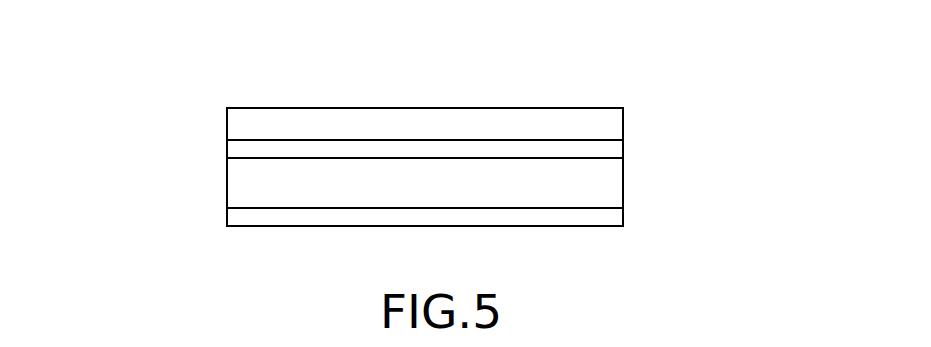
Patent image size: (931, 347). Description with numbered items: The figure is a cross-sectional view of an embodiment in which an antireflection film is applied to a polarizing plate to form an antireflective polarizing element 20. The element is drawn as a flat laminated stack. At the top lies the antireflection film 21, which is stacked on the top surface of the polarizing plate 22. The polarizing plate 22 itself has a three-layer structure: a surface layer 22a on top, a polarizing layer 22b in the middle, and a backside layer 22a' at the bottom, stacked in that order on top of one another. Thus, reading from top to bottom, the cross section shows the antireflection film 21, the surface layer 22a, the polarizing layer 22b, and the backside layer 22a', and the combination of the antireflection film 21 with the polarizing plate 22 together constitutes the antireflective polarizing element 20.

The antireflective polarizing element 20 is at (127, 122).
The antireflection film 21 is at (247, 125).
The polarizing plate 22 is at (215, 143).
The surface layer 22a is at (475, 143).
The polarizing layer 22b is at (605, 195).
The backside layer 22a' is at (478, 222).